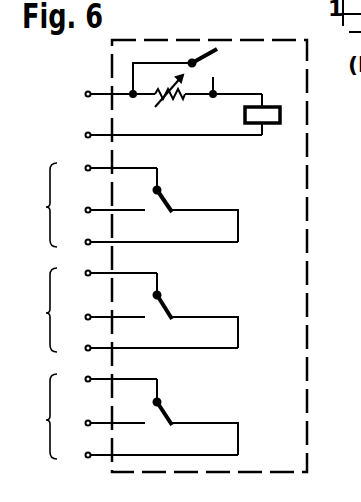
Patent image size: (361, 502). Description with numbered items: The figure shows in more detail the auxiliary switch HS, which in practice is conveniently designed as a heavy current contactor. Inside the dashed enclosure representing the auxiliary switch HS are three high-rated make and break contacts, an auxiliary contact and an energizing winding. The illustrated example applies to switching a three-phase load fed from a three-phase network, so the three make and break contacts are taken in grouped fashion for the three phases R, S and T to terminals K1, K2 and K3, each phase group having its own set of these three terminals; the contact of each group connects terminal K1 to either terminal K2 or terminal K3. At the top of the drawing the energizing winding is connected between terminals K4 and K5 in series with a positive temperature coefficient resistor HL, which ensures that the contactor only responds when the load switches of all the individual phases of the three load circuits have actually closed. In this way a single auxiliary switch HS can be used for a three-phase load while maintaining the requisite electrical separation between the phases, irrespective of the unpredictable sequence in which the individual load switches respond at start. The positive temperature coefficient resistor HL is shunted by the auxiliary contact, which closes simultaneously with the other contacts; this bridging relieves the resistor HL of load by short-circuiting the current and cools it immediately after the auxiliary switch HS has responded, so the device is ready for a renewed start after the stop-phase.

The auxiliary switch HS is at (307, 155).
The positive temperature coefficient resistor HL is at (172, 101).
The terminal K4 is at (162, 95).
The terminal K5 is at (162, 136).
The terminal K1 is at (109, 274).
The terminal K2 is at (103, 317).
The terminal K3 is at (150, 349).
The phase R is at (46, 205).
The phase S is at (45, 310).
The phase T is at (47, 416).